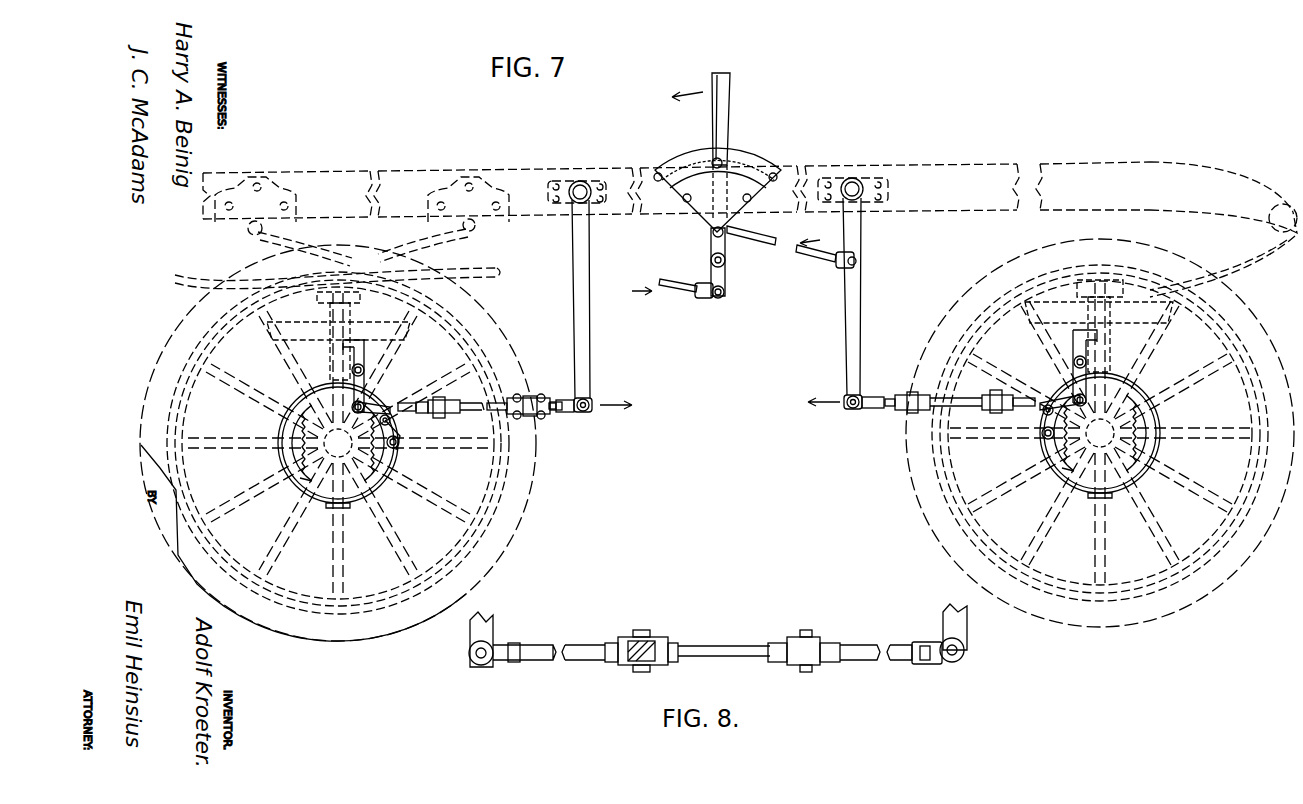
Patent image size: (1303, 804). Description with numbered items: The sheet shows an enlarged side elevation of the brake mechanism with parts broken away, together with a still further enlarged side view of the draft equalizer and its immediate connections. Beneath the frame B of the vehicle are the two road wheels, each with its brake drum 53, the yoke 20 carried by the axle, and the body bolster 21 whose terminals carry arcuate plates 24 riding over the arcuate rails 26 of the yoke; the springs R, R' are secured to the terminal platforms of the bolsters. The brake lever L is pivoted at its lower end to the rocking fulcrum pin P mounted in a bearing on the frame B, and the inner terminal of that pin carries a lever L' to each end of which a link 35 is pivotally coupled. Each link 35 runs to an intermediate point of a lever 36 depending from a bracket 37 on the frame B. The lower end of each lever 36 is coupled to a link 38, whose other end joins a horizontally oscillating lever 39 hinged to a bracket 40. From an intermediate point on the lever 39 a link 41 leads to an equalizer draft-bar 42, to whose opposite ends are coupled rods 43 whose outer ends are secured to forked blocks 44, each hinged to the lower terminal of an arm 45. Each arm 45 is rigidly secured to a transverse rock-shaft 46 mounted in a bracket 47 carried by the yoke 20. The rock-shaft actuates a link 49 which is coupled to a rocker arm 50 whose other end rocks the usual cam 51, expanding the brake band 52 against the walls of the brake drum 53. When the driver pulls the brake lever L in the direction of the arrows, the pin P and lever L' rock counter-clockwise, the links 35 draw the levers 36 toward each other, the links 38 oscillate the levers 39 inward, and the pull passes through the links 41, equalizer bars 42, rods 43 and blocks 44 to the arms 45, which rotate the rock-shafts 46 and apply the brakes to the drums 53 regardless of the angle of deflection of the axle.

In FIG. 7, the yoke 20 is at (1165, 332).
In FIG. 7, the body bolster 21 is at (363, 256).
In FIG. 7, the arcuate plates 24 is at (1250, 294).
In FIG. 7, the arcuate plates or rails 26 is at (282, 337).
In FIG. 7, the link 35 is at (682, 294).
In FIG. 7, the lever 36 is at (590, 354).
In FIG. 8, the lever 36 is at (490, 638).
In FIG. 7, the bracket 37 is at (581, 181).
In FIG. 7, the link 38 is at (569, 414).
In FIG. 8, the link 38 is at (552, 645).
In FIG. 7, the horizontally oscillating lever 39 is at (908, 393).
In FIG. 8, the horizontally oscillating lever 39 is at (648, 640).
In FIG. 7, the bracket 40 is at (533, 396).
In FIG. 7, the link 41 is at (470, 402).
In FIG. 8, the link 41 is at (708, 645).
In FIG. 7, the equalizer draft-bar 42 is at (440, 416).
In FIG. 8, the equalizer draft-bar 42 is at (810, 640).
In FIG. 7, the rods 43 is at (410, 402).
In FIG. 8, the rods 43 is at (857, 645).
In FIG. 7, the forked blocks 44 is at (380, 404).
In FIG. 8, the forked blocks 44 is at (928, 662).
In FIG. 7, the arm 45 is at (352, 390).
In FIG. 8, the arm 45 is at (942, 626).
In FIG. 7, the rock-shaft 46 is at (351, 370).
In FIG. 7, the bracket 47 is at (366, 342).
In FIG. 7, the link 49 is at (372, 422).
In FIG. 7, the oscillating or rocker arm 50 is at (388, 424).
In FIG. 7, the cam 51 is at (402, 454).
In FIG. 7, the brake band 52 is at (302, 480).
In FIG. 7, the brake drum 53 is at (334, 508).
In FIG. 7, the brake lever L is at (712, 100).
In FIG. 7, the lever L' is at (693, 262).
In FIG. 7, the rocking fulcrum pin or shaft P is at (726, 264).
In FIG. 7, the frame B is at (925, 165).
In FIG. 7, the spring R is at (1222, 263).
In FIG. 7, the spring R' is at (320, 436).